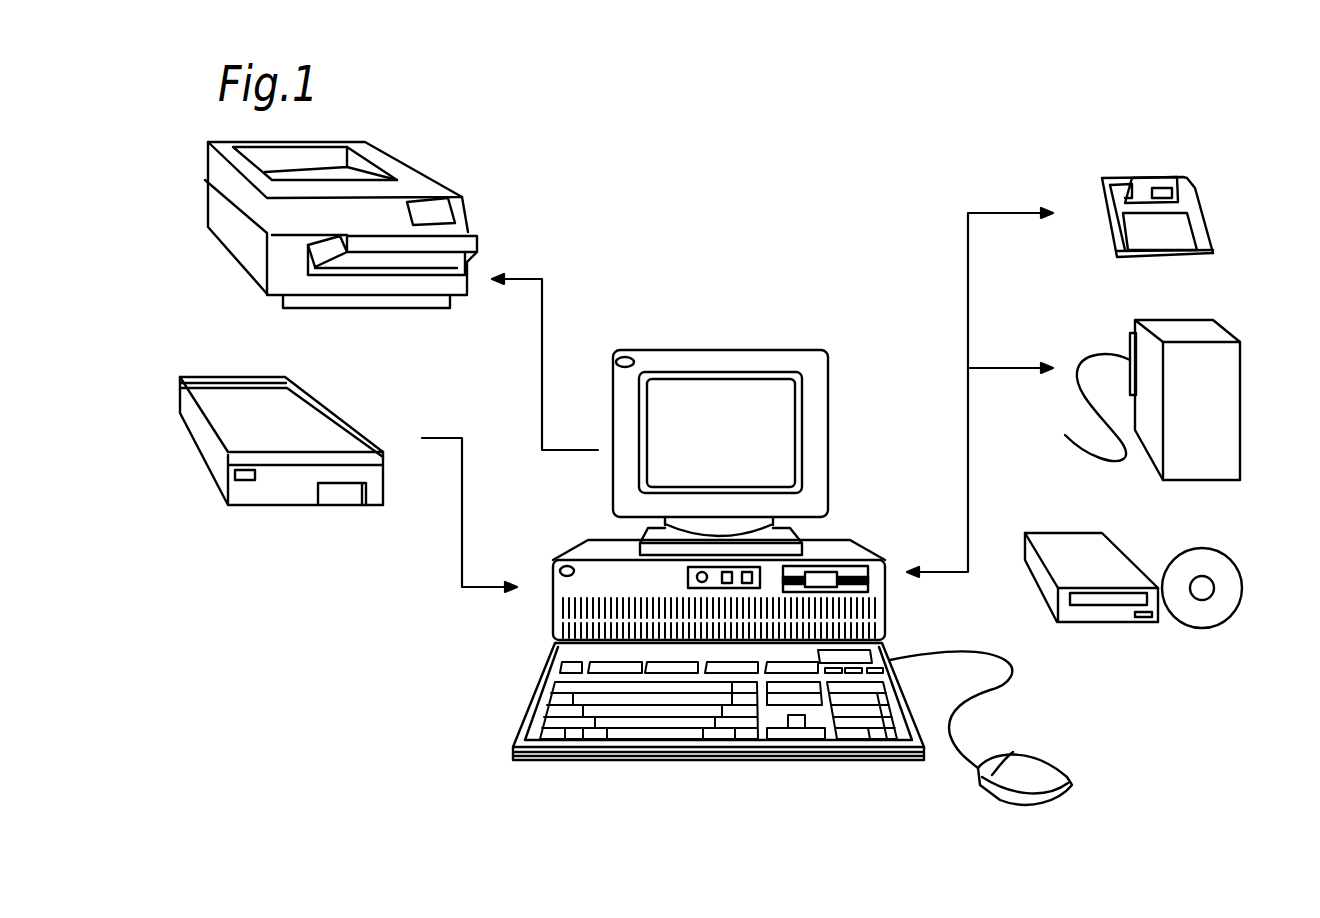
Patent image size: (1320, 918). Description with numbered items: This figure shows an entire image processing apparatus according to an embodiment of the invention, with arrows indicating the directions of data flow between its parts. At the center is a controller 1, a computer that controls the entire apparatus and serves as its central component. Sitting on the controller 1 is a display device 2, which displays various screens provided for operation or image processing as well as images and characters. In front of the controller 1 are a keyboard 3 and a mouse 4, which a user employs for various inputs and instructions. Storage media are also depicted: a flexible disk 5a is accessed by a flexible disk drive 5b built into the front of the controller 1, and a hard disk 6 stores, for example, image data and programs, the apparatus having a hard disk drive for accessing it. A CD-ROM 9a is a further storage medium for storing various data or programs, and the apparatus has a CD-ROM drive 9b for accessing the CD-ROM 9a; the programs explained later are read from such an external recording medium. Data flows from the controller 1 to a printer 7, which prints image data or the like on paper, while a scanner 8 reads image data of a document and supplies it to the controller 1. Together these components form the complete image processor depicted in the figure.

The controller 1 is at (703, 573).
The display device 2 is at (611, 423).
The keyboard 3 is at (545, 669).
The mouse 4 is at (1013, 783).
The floppy disk 5a is at (1185, 230).
The floppy disk drive 5b is at (857, 567).
The hard disk 6 is at (1200, 328).
The printer 7 is at (422, 186).
The scanner 8 is at (315, 422).
The CD-ROM disc 9a is at (1222, 567).
The CD-ROM drive 9b is at (1077, 552).